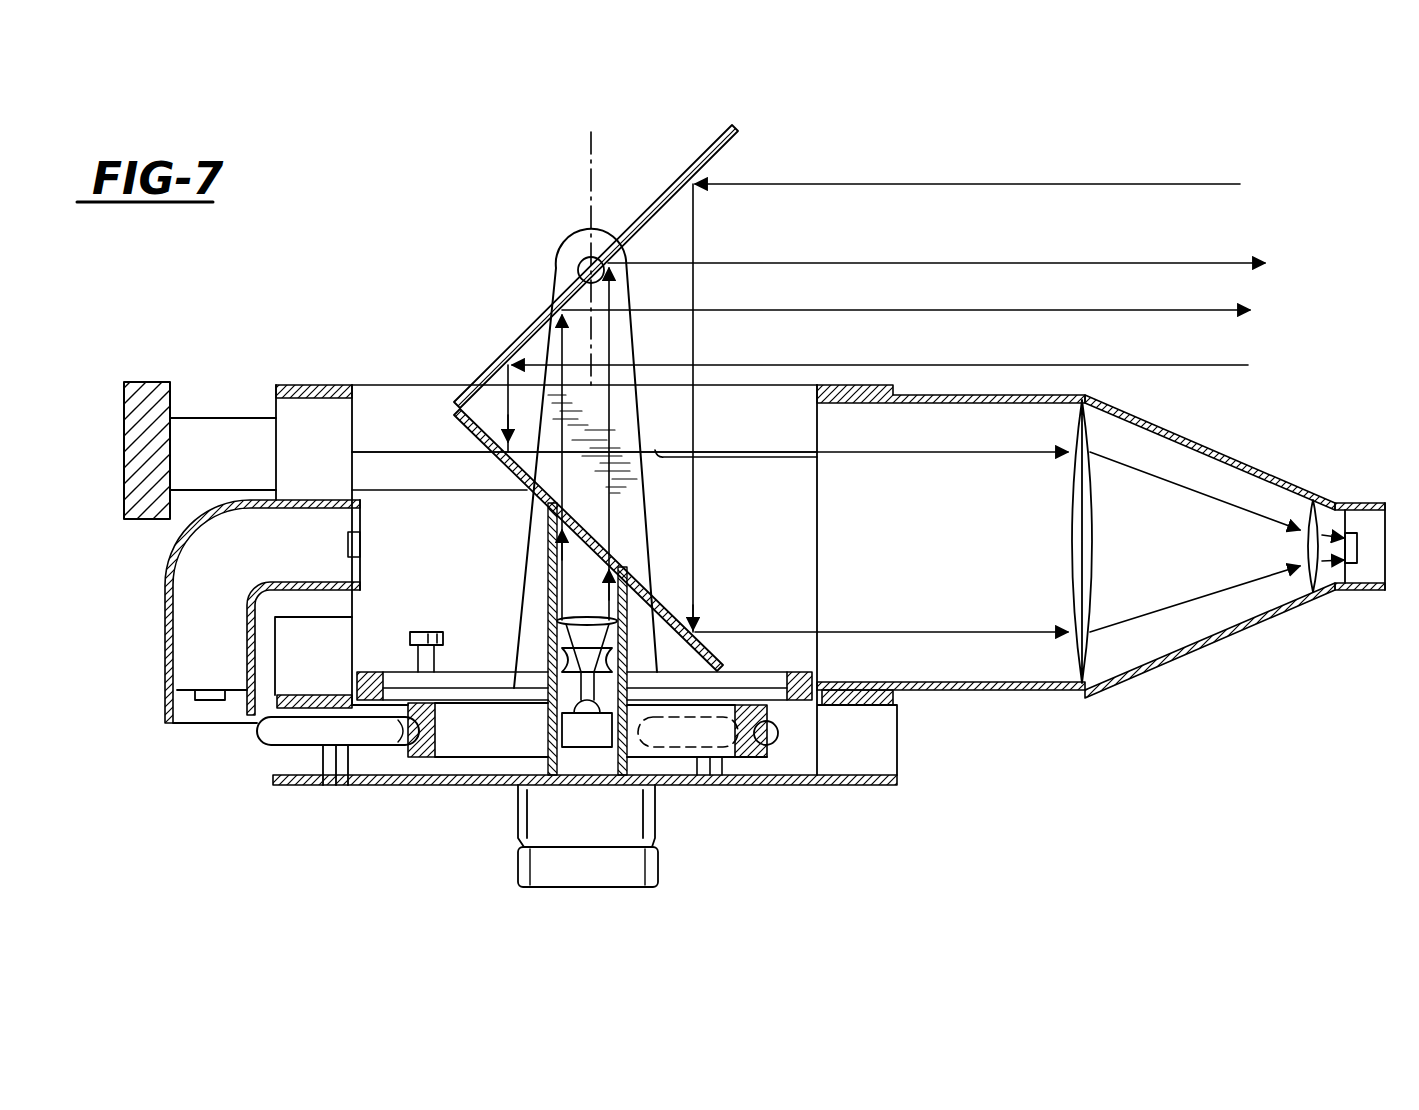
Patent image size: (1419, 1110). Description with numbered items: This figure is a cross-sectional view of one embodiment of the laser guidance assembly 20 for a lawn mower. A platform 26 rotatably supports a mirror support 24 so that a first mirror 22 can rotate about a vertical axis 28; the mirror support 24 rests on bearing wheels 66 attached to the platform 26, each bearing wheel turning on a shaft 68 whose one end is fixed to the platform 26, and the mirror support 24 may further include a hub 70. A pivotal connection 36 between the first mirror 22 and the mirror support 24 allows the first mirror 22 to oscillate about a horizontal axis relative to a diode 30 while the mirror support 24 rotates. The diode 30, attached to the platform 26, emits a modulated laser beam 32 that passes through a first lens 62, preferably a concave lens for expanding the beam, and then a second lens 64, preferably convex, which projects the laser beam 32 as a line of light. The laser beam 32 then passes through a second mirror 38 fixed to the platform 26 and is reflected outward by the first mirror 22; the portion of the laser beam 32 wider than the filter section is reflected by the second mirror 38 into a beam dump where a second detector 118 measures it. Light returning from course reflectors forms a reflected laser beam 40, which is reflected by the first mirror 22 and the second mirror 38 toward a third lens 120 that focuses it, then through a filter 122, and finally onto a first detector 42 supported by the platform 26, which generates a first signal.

The laser guidance assembly 20 is at (1152, 160).
The first mirror 22 is at (700, 153).
The mirror support 24 is at (557, 268).
The platform 26 is at (385, 395).
The vertical axis 28 is at (594, 163).
The diode 30 is at (590, 736).
The laser beam 32 is at (1233, 263).
The pivotal connection 36 is at (579, 257).
The second mirror 38 is at (540, 503).
The reflected laser beam 40 is at (1213, 184).
The first detector 42 is at (1350, 592).
The first lens 62 is at (614, 658).
The second lens 64 is at (592, 620).
The bearing wheels 66 is at (273, 737).
The shaft 68 is at (333, 786).
The hub 70 is at (460, 745).
The second detector 118 is at (352, 545).
The third lens 120 is at (1092, 673).
The filter 122 is at (1317, 508).